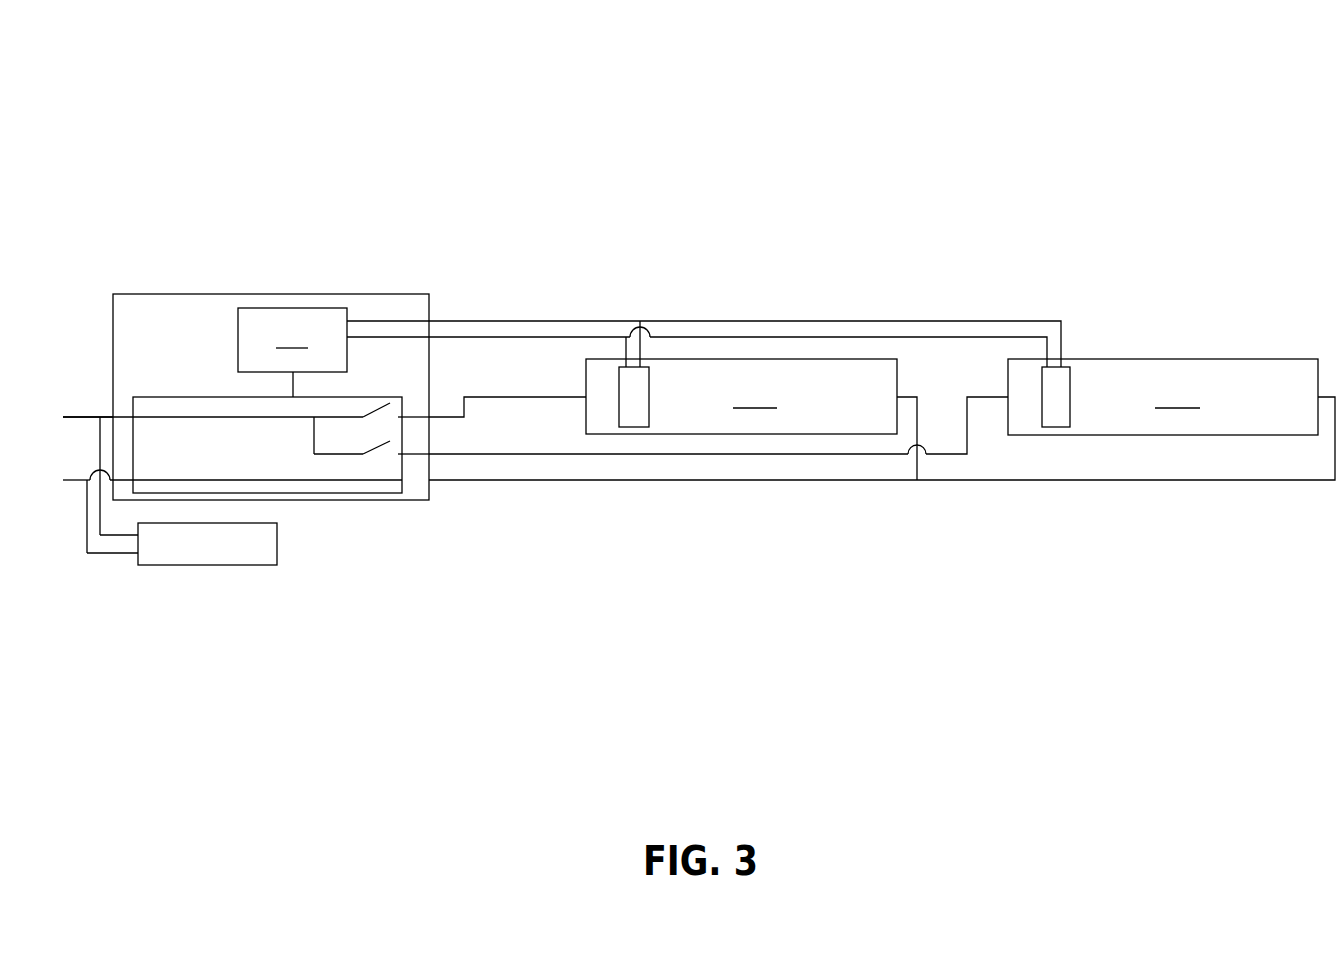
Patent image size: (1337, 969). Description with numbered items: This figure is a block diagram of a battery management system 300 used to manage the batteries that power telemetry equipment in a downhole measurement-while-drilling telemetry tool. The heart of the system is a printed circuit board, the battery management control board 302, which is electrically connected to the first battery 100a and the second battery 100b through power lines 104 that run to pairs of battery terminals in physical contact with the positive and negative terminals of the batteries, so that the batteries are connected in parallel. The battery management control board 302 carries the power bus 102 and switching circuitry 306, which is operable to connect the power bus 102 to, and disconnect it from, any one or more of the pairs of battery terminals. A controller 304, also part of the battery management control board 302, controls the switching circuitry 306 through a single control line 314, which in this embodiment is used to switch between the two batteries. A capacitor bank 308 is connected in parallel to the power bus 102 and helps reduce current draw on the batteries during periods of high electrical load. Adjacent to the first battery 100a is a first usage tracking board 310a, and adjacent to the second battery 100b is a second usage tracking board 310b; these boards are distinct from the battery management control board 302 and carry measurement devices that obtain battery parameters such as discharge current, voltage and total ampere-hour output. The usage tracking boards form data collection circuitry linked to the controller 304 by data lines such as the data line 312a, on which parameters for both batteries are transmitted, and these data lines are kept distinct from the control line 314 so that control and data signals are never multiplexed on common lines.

The battery management system 300 is at (353, 130).
The battery management control board 302 is at (178, 294).
The controller 304 is at (292, 340).
The switching circuitry 306 is at (328, 493).
The capacitor bank 308 is at (198, 565).
The power bus 102 is at (92, 419).
The power lines 104 is at (443, 417).
The data line 312a is at (787, 337).
The control line 314 is at (293, 388).
The first battery 100a is at (741, 396).
The second battery 100b is at (1163, 397).
The first usage tracking board 310a is at (630, 427).
The second usage tracking board 310b is at (1057, 427).